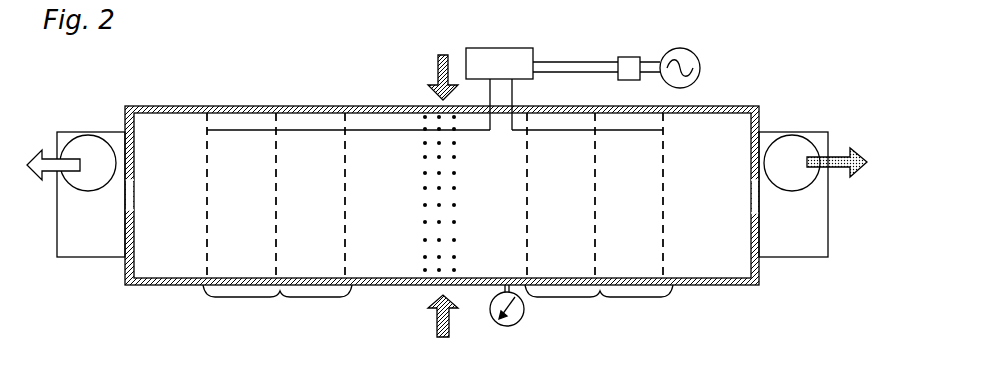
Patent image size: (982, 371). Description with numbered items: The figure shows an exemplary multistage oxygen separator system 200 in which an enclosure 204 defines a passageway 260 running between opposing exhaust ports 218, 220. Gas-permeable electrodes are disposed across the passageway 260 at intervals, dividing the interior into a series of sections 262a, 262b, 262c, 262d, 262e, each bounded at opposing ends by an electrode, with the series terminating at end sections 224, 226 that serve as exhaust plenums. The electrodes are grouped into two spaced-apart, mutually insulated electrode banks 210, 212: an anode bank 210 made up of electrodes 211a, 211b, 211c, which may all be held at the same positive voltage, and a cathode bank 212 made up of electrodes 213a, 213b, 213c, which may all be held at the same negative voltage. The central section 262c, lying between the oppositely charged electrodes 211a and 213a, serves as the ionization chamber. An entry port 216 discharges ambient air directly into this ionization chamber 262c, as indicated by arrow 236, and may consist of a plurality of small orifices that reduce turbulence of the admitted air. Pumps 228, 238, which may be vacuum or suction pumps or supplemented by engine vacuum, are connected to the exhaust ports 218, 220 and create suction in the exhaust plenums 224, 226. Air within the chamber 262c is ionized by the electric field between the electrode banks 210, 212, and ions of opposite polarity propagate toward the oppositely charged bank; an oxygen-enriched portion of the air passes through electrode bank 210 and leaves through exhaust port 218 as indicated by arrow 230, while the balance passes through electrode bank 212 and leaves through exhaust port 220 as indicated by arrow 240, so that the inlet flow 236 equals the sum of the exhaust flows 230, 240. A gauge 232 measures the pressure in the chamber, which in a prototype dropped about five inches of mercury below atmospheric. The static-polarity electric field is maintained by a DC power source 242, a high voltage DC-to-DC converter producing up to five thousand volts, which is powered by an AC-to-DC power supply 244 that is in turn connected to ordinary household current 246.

The oxygen separator system 200 is at (271, 35).
The enclosure 204 is at (152, 106).
The electrode bank 210 is at (277, 303).
The electrode 211a is at (346, 156).
The electrode 211b is at (277, 160).
The electrode 211c is at (207, 148).
The electrode bank 212 is at (599, 305).
The electrode 213a is at (528, 157).
The electrode 213b is at (597, 158).
The electrode 213c is at (665, 162).
The entry port 216 is at (467, 113).
The exhaust port 218 is at (129, 210).
The exhaust port 220 is at (760, 215).
The exhaust plenum 224 is at (173, 185).
The exhaust plenum 226 is at (692, 195).
The pump 228 is at (773, 132).
The arrow 230 is at (56, 170).
The gauge 232 is at (517, 320).
The arrow 236 is at (438, 72).
The pump 238 is at (82, 245).
The arrow 240 is at (833, 157).
The DC power source 242 is at (503, 52).
The power supply 244 is at (631, 57).
The household current 246 is at (689, 52).
The passageway 260 is at (392, 230).
The section 262a is at (233, 195).
The section 262b is at (303, 195).
The section 262c is at (376, 195).
The section 262d is at (554, 195).
The section 262e is at (622, 195).